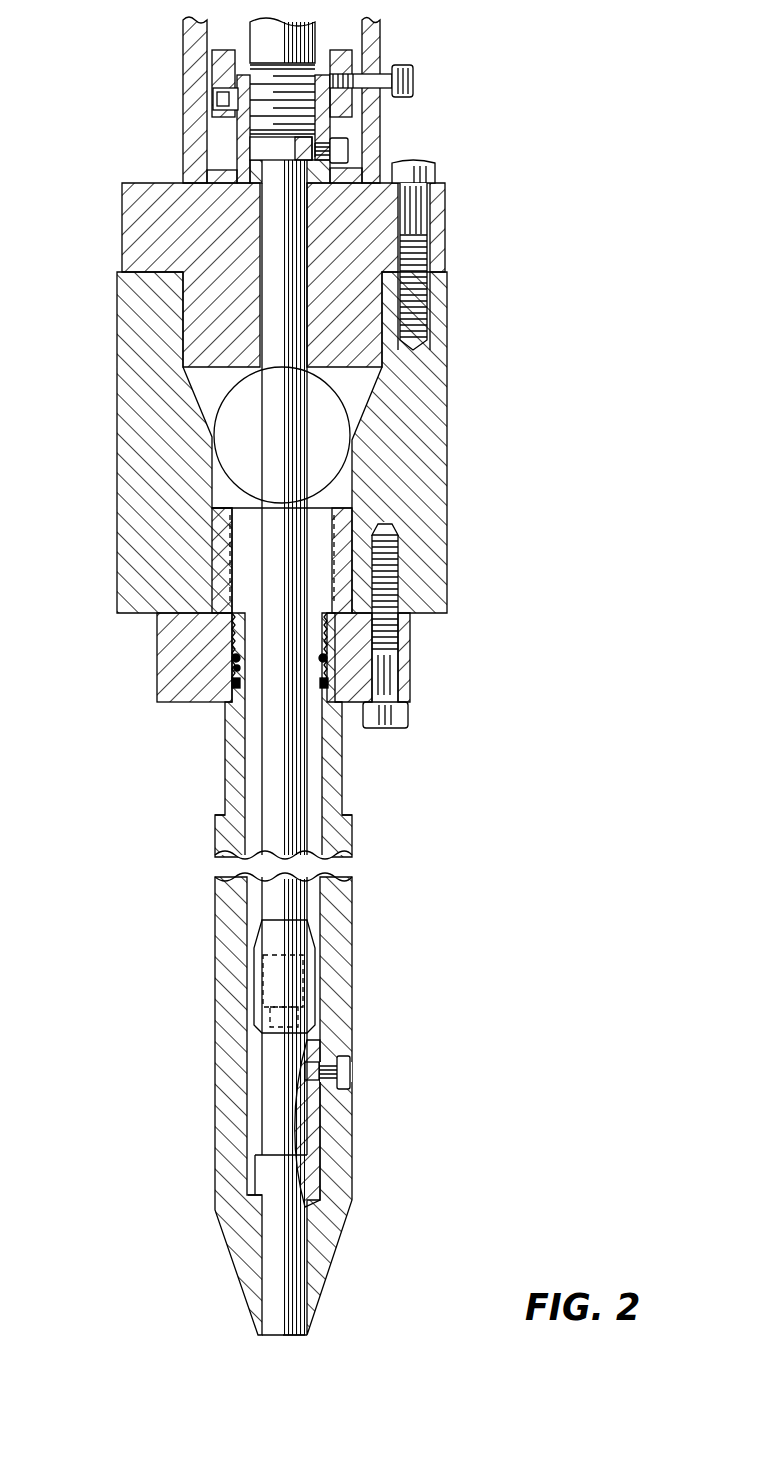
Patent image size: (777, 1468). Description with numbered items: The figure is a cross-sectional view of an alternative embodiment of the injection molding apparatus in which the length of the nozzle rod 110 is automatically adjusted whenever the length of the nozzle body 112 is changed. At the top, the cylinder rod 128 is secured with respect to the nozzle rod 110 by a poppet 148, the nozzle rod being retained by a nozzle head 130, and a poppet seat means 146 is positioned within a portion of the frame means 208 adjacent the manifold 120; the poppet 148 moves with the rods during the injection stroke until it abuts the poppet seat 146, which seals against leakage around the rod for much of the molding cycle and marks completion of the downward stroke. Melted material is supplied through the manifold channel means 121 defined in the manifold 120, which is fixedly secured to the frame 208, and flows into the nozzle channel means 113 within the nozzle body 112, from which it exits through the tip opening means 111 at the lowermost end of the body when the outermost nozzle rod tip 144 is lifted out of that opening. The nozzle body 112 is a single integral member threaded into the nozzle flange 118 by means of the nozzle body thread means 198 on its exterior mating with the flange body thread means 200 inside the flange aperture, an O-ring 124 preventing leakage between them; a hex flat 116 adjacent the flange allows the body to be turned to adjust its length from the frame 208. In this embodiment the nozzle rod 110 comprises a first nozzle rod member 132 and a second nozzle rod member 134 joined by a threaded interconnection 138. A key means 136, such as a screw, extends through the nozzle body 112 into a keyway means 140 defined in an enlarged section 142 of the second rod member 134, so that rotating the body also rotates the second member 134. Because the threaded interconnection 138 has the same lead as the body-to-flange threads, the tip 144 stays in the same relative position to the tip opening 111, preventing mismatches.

The nozzle rod 110 is at (268, 245).
The tip opening means 111 is at (264, 1322).
The nozzle body 112 is at (220, 828).
The nozzle channel means 113 is at (313, 783).
The hex flat 116 is at (340, 800).
The nozzle flange 118 is at (157, 697).
The manifold 120 is at (442, 462).
The manifold channel means 121 is at (362, 387).
The O-ring 124 is at (233, 685).
The cylinder rod 128 is at (308, 40).
The nozzle head 130 is at (260, 155).
The first nozzle rod member 132 is at (273, 898).
The second nozzle rod member 134 is at (267, 1050).
The key means 136 is at (350, 1062).
The threaded interconnection 138 is at (307, 982).
The keyway means 140 is at (312, 1145).
The enlarged section 142 is at (263, 1127).
The nozzle rod tip 144 is at (288, 1338).
The poppet seat means 146 is at (250, 190).
The poppet 148 is at (223, 130).
The nozzle body thread means 198 is at (233, 673).
The flange body thread means 200 is at (232, 632).
The frame means 208 is at (372, 259).